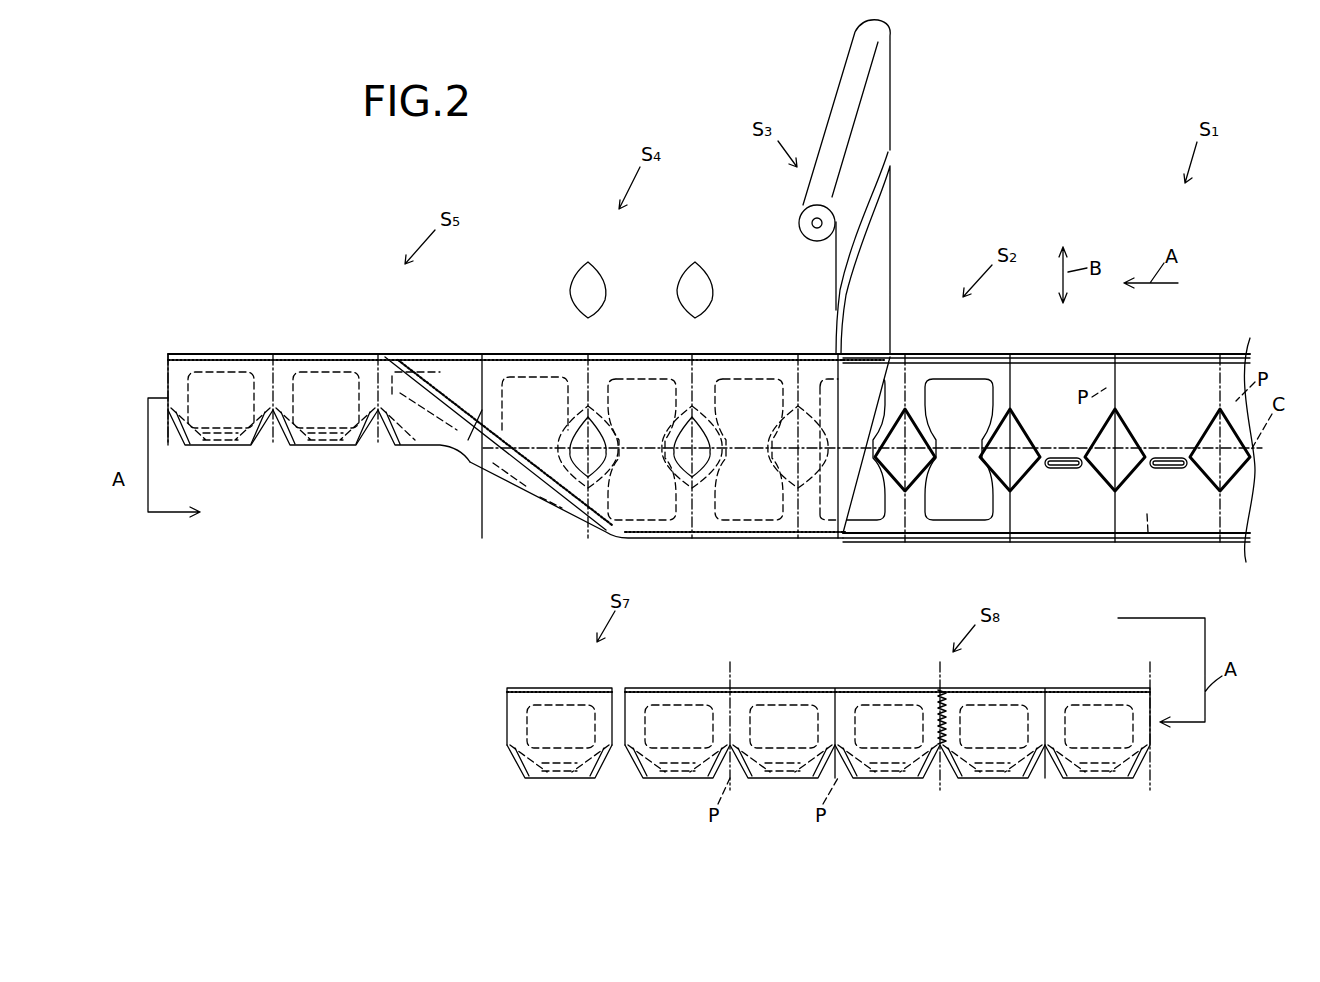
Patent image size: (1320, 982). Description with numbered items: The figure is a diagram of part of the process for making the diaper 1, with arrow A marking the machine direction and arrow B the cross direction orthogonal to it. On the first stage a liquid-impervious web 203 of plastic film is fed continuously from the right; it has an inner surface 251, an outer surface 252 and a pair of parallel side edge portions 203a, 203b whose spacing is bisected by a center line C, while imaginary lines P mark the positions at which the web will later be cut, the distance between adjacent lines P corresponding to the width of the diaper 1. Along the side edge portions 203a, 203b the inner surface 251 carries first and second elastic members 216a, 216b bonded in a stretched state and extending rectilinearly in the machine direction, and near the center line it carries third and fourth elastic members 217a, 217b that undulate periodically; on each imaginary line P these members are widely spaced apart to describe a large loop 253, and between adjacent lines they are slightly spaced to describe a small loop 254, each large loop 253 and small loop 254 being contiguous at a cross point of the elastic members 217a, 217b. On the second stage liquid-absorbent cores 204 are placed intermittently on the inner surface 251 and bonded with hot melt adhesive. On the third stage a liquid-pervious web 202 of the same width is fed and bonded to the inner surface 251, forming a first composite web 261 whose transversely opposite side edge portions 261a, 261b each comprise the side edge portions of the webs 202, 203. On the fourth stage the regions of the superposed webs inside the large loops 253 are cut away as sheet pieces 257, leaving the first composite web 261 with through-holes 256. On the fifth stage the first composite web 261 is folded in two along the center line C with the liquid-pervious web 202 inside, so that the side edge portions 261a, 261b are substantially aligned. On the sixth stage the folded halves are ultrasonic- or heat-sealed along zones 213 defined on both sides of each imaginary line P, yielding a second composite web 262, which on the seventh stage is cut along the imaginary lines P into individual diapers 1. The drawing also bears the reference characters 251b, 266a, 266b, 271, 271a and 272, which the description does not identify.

The diaper 1 is at (515, 682).
The liquid-pervious web 202 is at (890, 251).
The liquid-impervious web 203 is at (1178, 381).
The side edge portion 203a is at (1040, 542).
The side edge portion 203b is at (1022, 358).
The liquid-absorbent core 204 is at (955, 521).
The sealed zone 213 is at (937, 718).
The first elastic member 216a is at (1088, 542).
The second elastic member 216b is at (1088, 358).
The third elastic member 217a is at (598, 488).
The fourth elastic member 217b is at (604, 424).
The inner surface 251 is at (1228, 536).
The web fold line 251b is at (917, 357).
The outer surface 252 is at (1148, 543).
The large loop 253 is at (568, 430).
The small loop 254 is at (1063, 470).
The through-hole 256 is at (703, 445).
The sheet piece 257 is at (598, 269).
The first composite web 261 is at (788, 540).
The side edge portion of first composite web 261a is at (748, 540).
The side edge portion of first composite web 261b is at (640, 356).
The second composite web 262 is at (887, 782).
The folding line (front) 266a is at (391, 382).
The folding line (back) 266b is at (475, 370).
The folded lower edge 271 is at (612, 528).
The folded lower edge portion 271a is at (580, 495).
The waist elastic region 272 is at (538, 368).